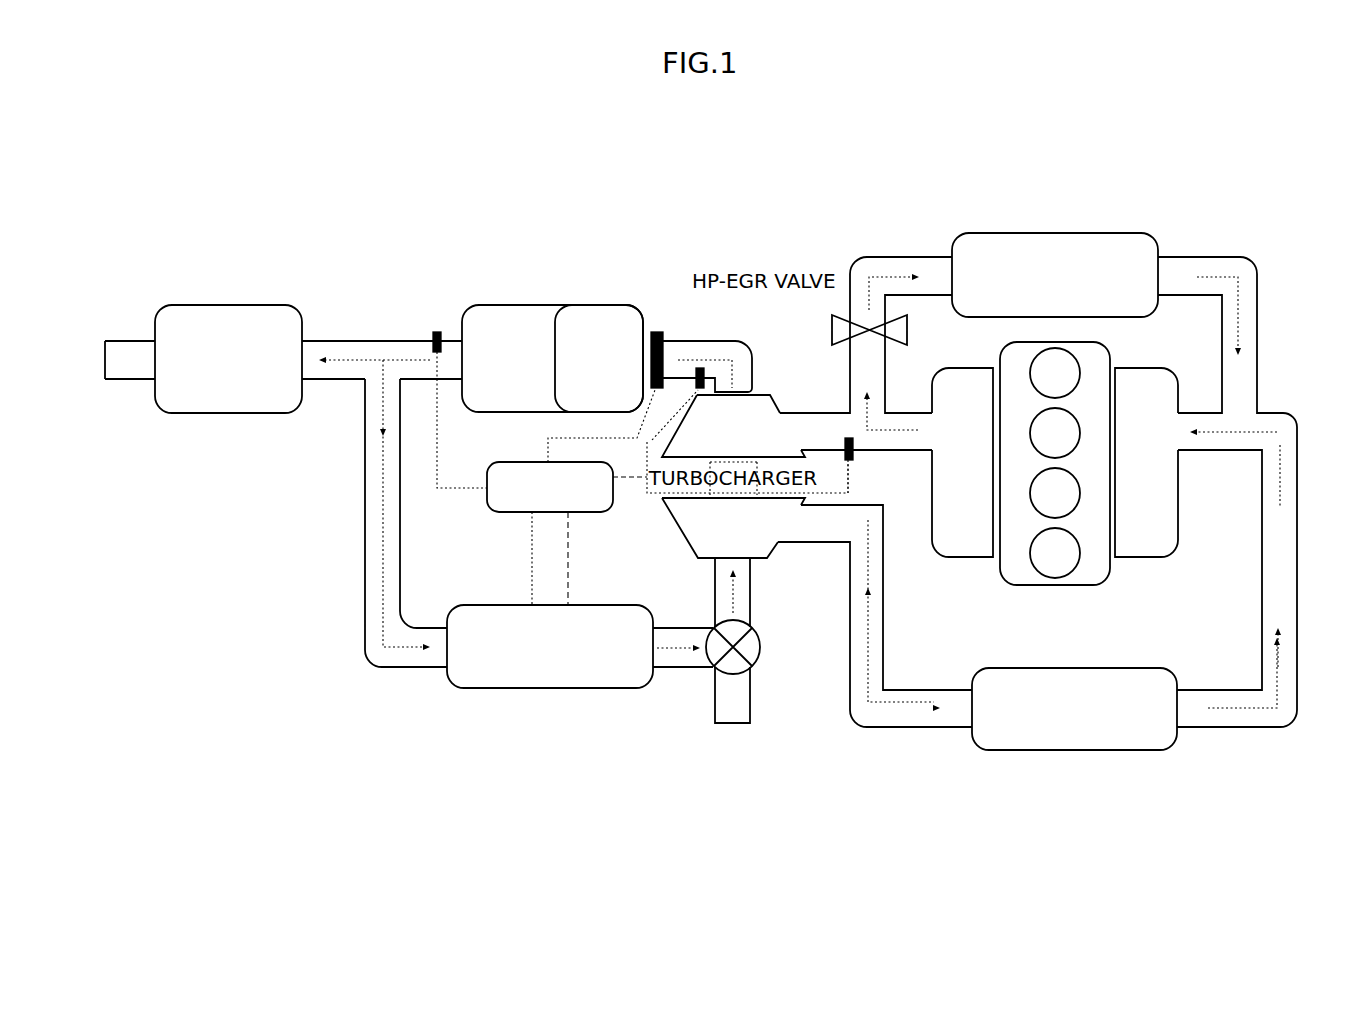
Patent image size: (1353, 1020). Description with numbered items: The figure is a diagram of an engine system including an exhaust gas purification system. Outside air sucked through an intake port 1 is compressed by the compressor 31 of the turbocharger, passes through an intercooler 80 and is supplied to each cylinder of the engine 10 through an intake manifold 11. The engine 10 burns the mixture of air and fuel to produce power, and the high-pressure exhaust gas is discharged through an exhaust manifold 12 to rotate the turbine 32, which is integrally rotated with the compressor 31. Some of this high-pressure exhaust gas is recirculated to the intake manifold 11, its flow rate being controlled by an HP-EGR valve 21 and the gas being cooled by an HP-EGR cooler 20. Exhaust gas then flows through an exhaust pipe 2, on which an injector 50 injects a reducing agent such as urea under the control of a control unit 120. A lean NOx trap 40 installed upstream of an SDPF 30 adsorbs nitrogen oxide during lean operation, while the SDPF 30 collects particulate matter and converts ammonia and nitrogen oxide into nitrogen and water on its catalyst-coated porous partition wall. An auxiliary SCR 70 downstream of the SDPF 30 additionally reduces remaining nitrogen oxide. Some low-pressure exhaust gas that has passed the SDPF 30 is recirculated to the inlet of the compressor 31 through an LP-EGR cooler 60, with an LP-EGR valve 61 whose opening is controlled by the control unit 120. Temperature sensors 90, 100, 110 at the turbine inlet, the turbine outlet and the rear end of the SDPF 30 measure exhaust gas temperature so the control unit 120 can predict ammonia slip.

The intake port 1 is at (730, 713).
The exhaust pipe 2 is at (687, 338).
The engine 10 is at (1097, 570).
The intake manifold 11 is at (1165, 545).
The exhaust manifold 12 is at (980, 552).
The HP-EGR cooler 20 is at (1062, 247).
The HP-EGR valve 21 is at (908, 330).
The SDPF 30 is at (515, 305).
The compressor 31 is at (695, 538).
The turbine 32 is at (767, 398).
The lean NOx trap (LNT) 40 is at (602, 305).
The injector 50 is at (658, 332).
The LP-EGR cooler 60 is at (550, 692).
The LP-EGR valve 61 is at (758, 640).
The auxiliary SCR 70 is at (227, 303).
The intercooler 80 is at (1078, 737).
The temperature sensor 90 is at (853, 460).
The temperature sensor 100 is at (702, 370).
The temperature sensor 110 is at (437, 332).
The control unit 120 is at (493, 508).